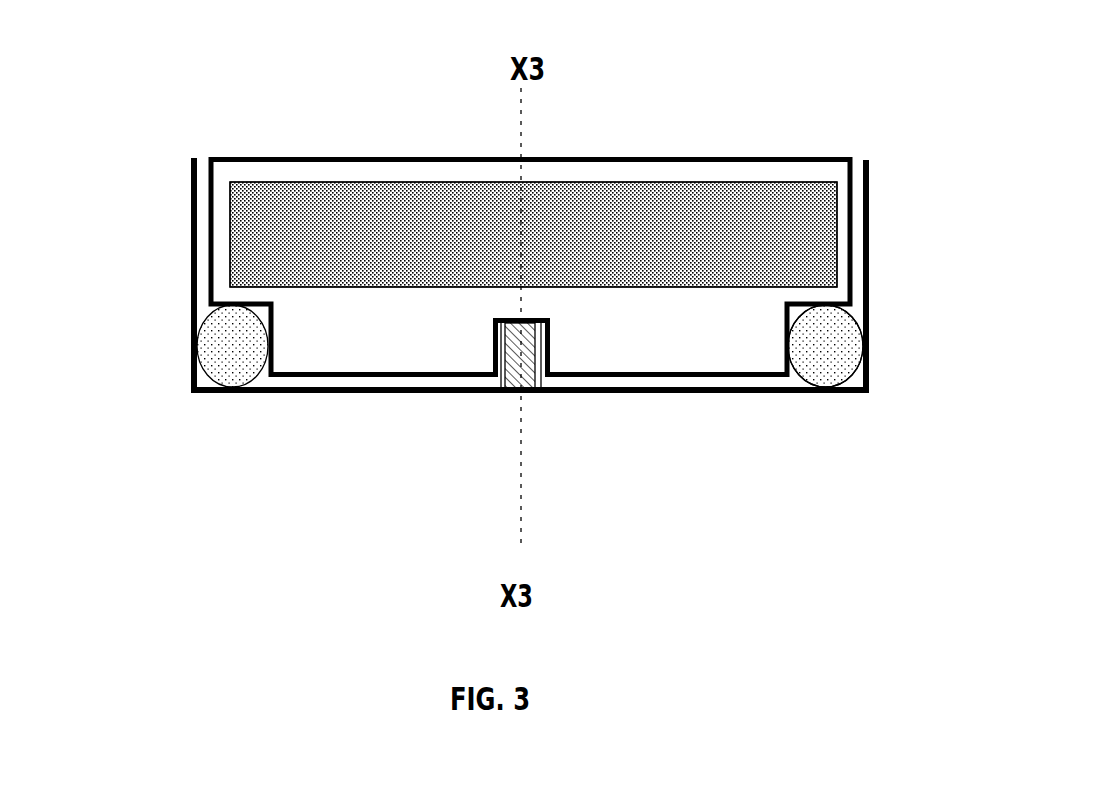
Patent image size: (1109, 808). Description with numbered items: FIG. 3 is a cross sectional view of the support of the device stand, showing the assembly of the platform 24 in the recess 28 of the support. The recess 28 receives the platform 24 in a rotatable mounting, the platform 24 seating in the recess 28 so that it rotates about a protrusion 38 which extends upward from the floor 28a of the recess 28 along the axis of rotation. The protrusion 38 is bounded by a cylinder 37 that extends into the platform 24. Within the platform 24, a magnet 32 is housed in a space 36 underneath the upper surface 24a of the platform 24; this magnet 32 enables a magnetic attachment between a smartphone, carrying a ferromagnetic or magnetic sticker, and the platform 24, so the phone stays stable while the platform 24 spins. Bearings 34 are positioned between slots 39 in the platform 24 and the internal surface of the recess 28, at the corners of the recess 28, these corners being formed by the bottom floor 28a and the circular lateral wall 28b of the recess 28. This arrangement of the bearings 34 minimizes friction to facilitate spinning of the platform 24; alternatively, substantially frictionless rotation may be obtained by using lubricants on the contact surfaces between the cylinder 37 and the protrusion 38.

The platform 24 is at (490, 150).
The upper surface of the platform 24a is at (747, 157).
The recess 28 is at (192, 247).
The floor of the recess 28a is at (358, 387).
The circular lateral wall of the recess 28b is at (862, 247).
The magnet 32 is at (728, 200).
The bearings 34 is at (834, 374).
The space 36 is at (397, 173).
The cylinder 37 is at (550, 343).
The protrusion 38 is at (507, 392).
The slots 39 is at (270, 345).